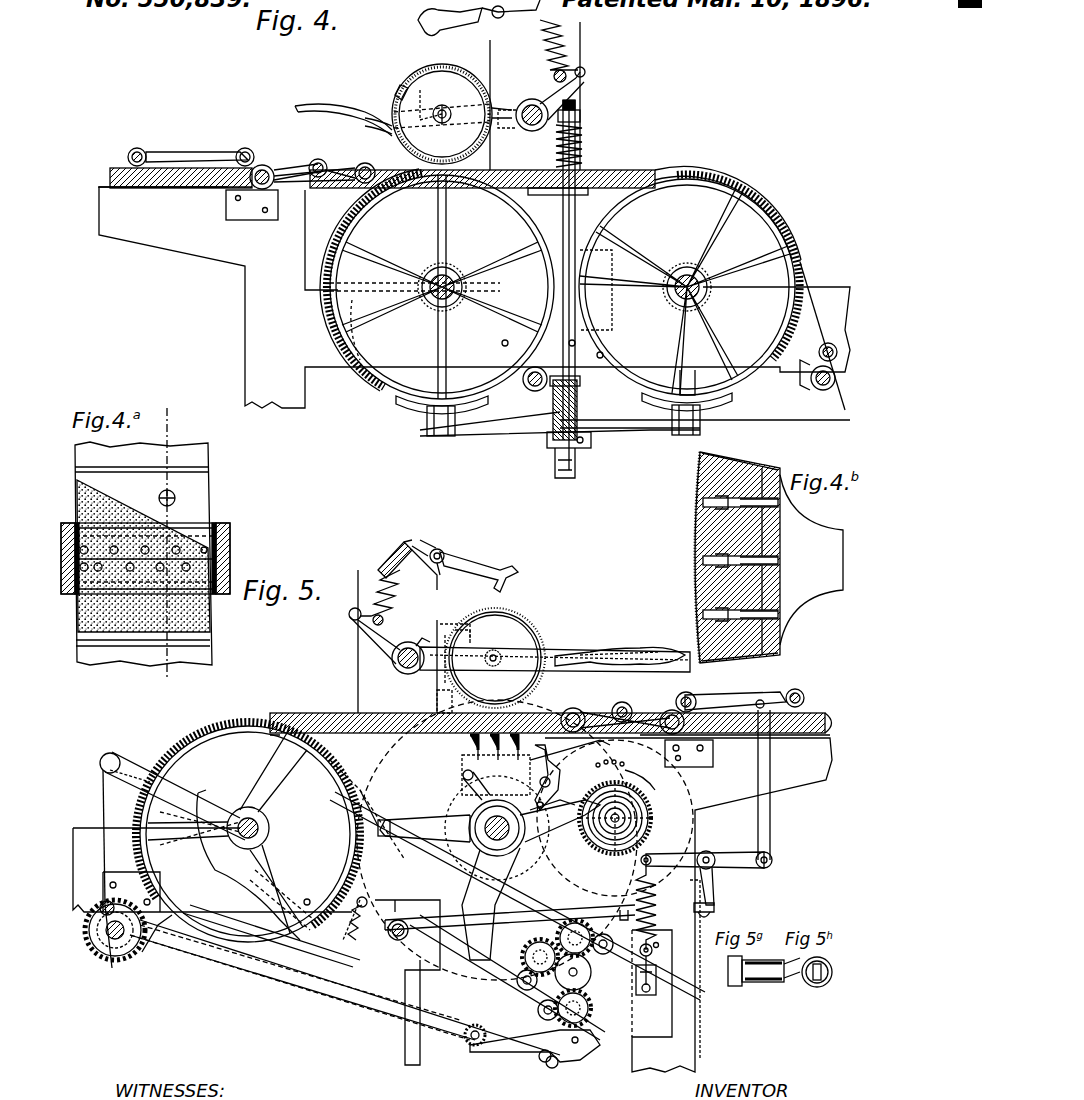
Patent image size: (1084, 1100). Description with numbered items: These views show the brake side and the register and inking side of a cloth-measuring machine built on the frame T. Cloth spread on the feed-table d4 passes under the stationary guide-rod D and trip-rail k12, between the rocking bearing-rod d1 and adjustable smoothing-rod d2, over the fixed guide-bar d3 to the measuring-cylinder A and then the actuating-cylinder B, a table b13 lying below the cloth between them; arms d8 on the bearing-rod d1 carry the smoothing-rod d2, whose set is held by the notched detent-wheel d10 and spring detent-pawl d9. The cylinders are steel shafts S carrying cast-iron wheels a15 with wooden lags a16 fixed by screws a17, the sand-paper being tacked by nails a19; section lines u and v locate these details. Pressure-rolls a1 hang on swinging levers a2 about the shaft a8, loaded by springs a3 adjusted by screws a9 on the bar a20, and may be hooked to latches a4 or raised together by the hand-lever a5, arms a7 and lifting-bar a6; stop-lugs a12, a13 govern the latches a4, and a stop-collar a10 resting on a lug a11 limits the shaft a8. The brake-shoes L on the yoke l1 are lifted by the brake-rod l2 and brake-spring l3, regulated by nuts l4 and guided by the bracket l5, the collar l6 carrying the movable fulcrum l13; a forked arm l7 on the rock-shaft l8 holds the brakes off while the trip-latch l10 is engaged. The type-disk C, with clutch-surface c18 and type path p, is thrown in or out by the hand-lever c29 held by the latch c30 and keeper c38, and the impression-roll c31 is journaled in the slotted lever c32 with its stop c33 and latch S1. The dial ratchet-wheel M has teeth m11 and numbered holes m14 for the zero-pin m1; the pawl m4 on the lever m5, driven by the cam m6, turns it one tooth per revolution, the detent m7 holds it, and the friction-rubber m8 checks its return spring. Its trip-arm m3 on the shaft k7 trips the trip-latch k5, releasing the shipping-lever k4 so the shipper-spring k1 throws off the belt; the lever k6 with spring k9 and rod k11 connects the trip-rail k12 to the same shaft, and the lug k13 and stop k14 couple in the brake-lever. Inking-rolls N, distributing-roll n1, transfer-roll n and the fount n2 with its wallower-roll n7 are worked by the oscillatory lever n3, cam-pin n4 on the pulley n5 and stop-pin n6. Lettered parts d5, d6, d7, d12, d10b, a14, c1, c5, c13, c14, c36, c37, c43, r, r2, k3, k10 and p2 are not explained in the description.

In FIG. 4, the frame T is at (474, 297).
In FIG. 5, the frame T is at (452, 905).
In FIG. 4, the measuring-cylinder A is at (437, 284).
In FIG. 4A, the measuring-cylinder A is at (149, 554).
In FIG. 4B, the measuring-cylinder A is at (747, 557).
In FIG. 4, the actuating-cylinder B is at (689, 284).
In FIG. 5, the actuating-cylinder B is at (248, 832).
In FIG. 4, the steel shaft S is at (438, 308).
In FIG. 5, the steel shaft S is at (383, 593).
In FIG. 4, the latch S1 is at (700, 292).
In FIG. 4A, the latch S1 is at (232, 536).
In FIG. 5, the latch S1 is at (248, 828).
In FIG. 4, the stationary guide-rod D is at (128, 154).
In FIG. 5, the stationary guide-rod D is at (798, 690).
In FIG. 4, the trip-rail k12 is at (200, 149).
In FIG. 5, the trip-rail k12 is at (731, 693).
In FIG. 4, the bearing-rod d1 is at (262, 165).
In FIG. 5, the bearing-rod d1 is at (672, 710).
In FIG. 4, the adjustable smoothing-rod d2 is at (330, 152).
In FIG. 5, the adjustable smoothing-rod d2 is at (622, 702).
In FIG. 4, the fixed guide-bar d3 is at (376, 158).
In FIG. 5, the fixed guide-bar d3 is at (580, 700).
In FIG. 4, the feed-table d4 is at (175, 184).
In FIG. 5, the feed-table d4 is at (550, 743).
In FIG. 4, the roller d5 is at (836, 380).
In FIG. 4, the pin d6 is at (827, 336).
In FIG. 5, the pin d6 is at (118, 896).
In FIG. 4, the spring detent-pawl d9 is at (296, 167).
In FIG. 5, the spring detent-pawl d9 is at (668, 702).
In FIG. 4, the stationary table b13 is at (650, 160).
In FIG. 5, the stationary table b13 is at (325, 713).
In FIG. 4, the pressure-roll a1 is at (442, 114).
In FIG. 4, the swinging lever a2 is at (585, 76).
In FIG. 5, the swinging lever a2 is at (370, 636).
In FIG. 4, the spring a3 is at (565, 36).
In FIG. 5, the spring a3 is at (366, 581).
In FIG. 4, the latch a4 is at (450, 22).
In FIG. 5, the latch a4 is at (500, 563).
In FIG. 4, the hand-lever a5 is at (360, 104).
In FIG. 4, the lifting-bar a6 is at (465, 95).
In FIG. 5, the lifting-bar a6 is at (381, 614).
In FIG. 4, the arm a7 is at (556, 93).
In FIG. 4A, the arm a7 is at (175, 498).
In FIG. 4, the shaft a8 is at (536, 130).
In FIG. 5, the shaft a8 is at (400, 643).
In FIG. 4, the adjusting-screw a9 is at (486, 105).
In FIG. 5, the adjusting-screw a9 is at (436, 548).
In FIG. 4, the stop-collar a10 is at (516, 105).
In FIG. 4, the lug a11 is at (519, 17).
In FIG. 4, the stop-lug a12 is at (426, 304).
In FIG. 5, the stop-lug a12 is at (435, 547).
In FIG. 4, the stop-lug a13 is at (493, 24).
In FIG. 5, the stop-lug a13 is at (447, 574).
In FIG. 4, the post a14 is at (529, 96).
In FIG. 4B, the post a14 is at (702, 538).
In FIG. 4, the cast-iron wheel a15 is at (375, 221).
In FIG. 4B, the cast-iron wheel a15 is at (812, 560).
In FIG. 4A, the wooden lag a16 is at (137, 487).
In FIG. 4B, the wooden lag a16 is at (702, 572).
In FIG. 4B, the screw a17 is at (778, 560).
In FIG. 4A, the nail a19 is at (205, 618).
In FIG. 4, the bar a20 is at (400, 83).
In FIG. 5, the bar a20 is at (407, 565).
In FIG. 4, the yoke l1 is at (635, 424).
In FIG. 4, the brake-rod l2 is at (514, 285).
In FIG. 4, the brake-spring l3 is at (595, 135).
In FIG. 4, the nut l4 is at (582, 115).
In FIG. 4, the bracket l5 is at (563, 286).
In FIG. 4, the collar l6 is at (547, 448).
In FIG. 4, the forked arm l7 is at (580, 392).
In FIG. 4, the rock-shaft l8 is at (525, 382).
In FIG. 4, the trip-latch l10 is at (687, 382).
In FIG. 4, the movable fulcrum l13 is at (585, 440).
In FIG. 4, the brake-shoe L is at (400, 412).
In FIG. 4, the section line u is at (345, 318).
In FIG. 4A, the section line v is at (164, 544).
In FIG. 5, the contacts c1 is at (500, 762).
In FIG. 5, the contact c5 is at (535, 756).
In FIG. 5, the rod c13 is at (517, 896).
In FIG. 5, the bearing c14 is at (402, 665).
In FIG. 5, the clutch-surface c18 is at (492, 878).
In FIG. 5, the hand-lever c29 is at (598, 675).
In FIG. 5, the latch c30 is at (600, 650).
In FIG. 5, the impression-roll c31 is at (495, 658).
In FIG. 5, the slotted lever c32 is at (555, 659).
In FIG. 5, the fixed stop c33 is at (417, 635).
In FIG. 5, the post c36 is at (414, 641).
In FIG. 5, the rod c37 is at (423, 874).
In FIG. 5, the keeper c38 is at (447, 701).
In FIG. 5, the pin c43 is at (466, 785).
In FIG. 5, the type-disk C is at (497, 840).
In FIG. 5, the rod r is at (397, 828).
In FIG. 5, the rod r2 is at (570, 827).
In FIG. 5, the type path p is at (367, 812).
In FIG. 5, the dial ratchet-wheel M is at (615, 818).
In FIG. 5, the zero-pin m1 is at (598, 753).
In FIG. 5G, the zero-pin m1 is at (764, 979).
In FIG. 5H, the zero-pin m1 is at (817, 980).
In FIG. 5, the trip-arm m3 is at (553, 777).
In FIG. 5, the pawl m4 is at (662, 796).
In FIG. 5, the lever m5 is at (555, 800).
In FIG. 5, the cam m6 is at (598, 858).
In FIG. 5, the detent m7 is at (668, 822).
In FIG. 5, the friction-rubber m8 is at (644, 778).
In FIG. 5, the teeth m11 is at (608, 746).
In FIG. 5, the numbered holes m14 is at (640, 766).
In FIG. 5, the shipper-spring k1 is at (163, 819).
In FIG. 5, the pin k3 is at (382, 918).
In FIG. 5, the shipping-lever k4 is at (505, 982).
In FIG. 5, the trip-latch k5 is at (716, 886).
In FIG. 5, the lever k6 is at (706, 860).
In FIG. 5, the shaft k7 is at (710, 852).
In FIG. 5, the adjustable spring k9 is at (656, 892).
In FIG. 5, the rod k10 is at (474, 970).
In FIG. 5, the rod k11 is at (776, 785).
In FIG. 5, the lug k13 is at (640, 963).
In FIG. 5, the stop k14 is at (715, 907).
In FIG. 5, the arm d7 is at (157, 933).
In FIG. 5, the arm d8 is at (138, 926).
In FIG. 5, the notched detent-wheel d10 is at (109, 934).
In FIG. 5, the pin d10b is at (680, 748).
In FIG. 4, the pin d12 is at (805, 351).
In FIG. 5, the inking-roll N is at (560, 952).
In FIG. 5, the transfer-roll n is at (572, 1008).
In FIG. 5, the distributing-roll n1 is at (591, 972).
In FIG. 5, the ink fount n2 is at (539, 1048).
In FIG. 5, the oscillatory lever n3 is at (345, 987).
In FIG. 5, the cam-pin n4 is at (230, 865).
In FIG. 5, the pulley n5 is at (271, 918).
In FIG. 5, the stop-pin n6 is at (310, 892).
In FIG. 5, the wallower-roll n7 is at (570, 1047).
In FIG. 5, the rod p2 is at (300, 982).